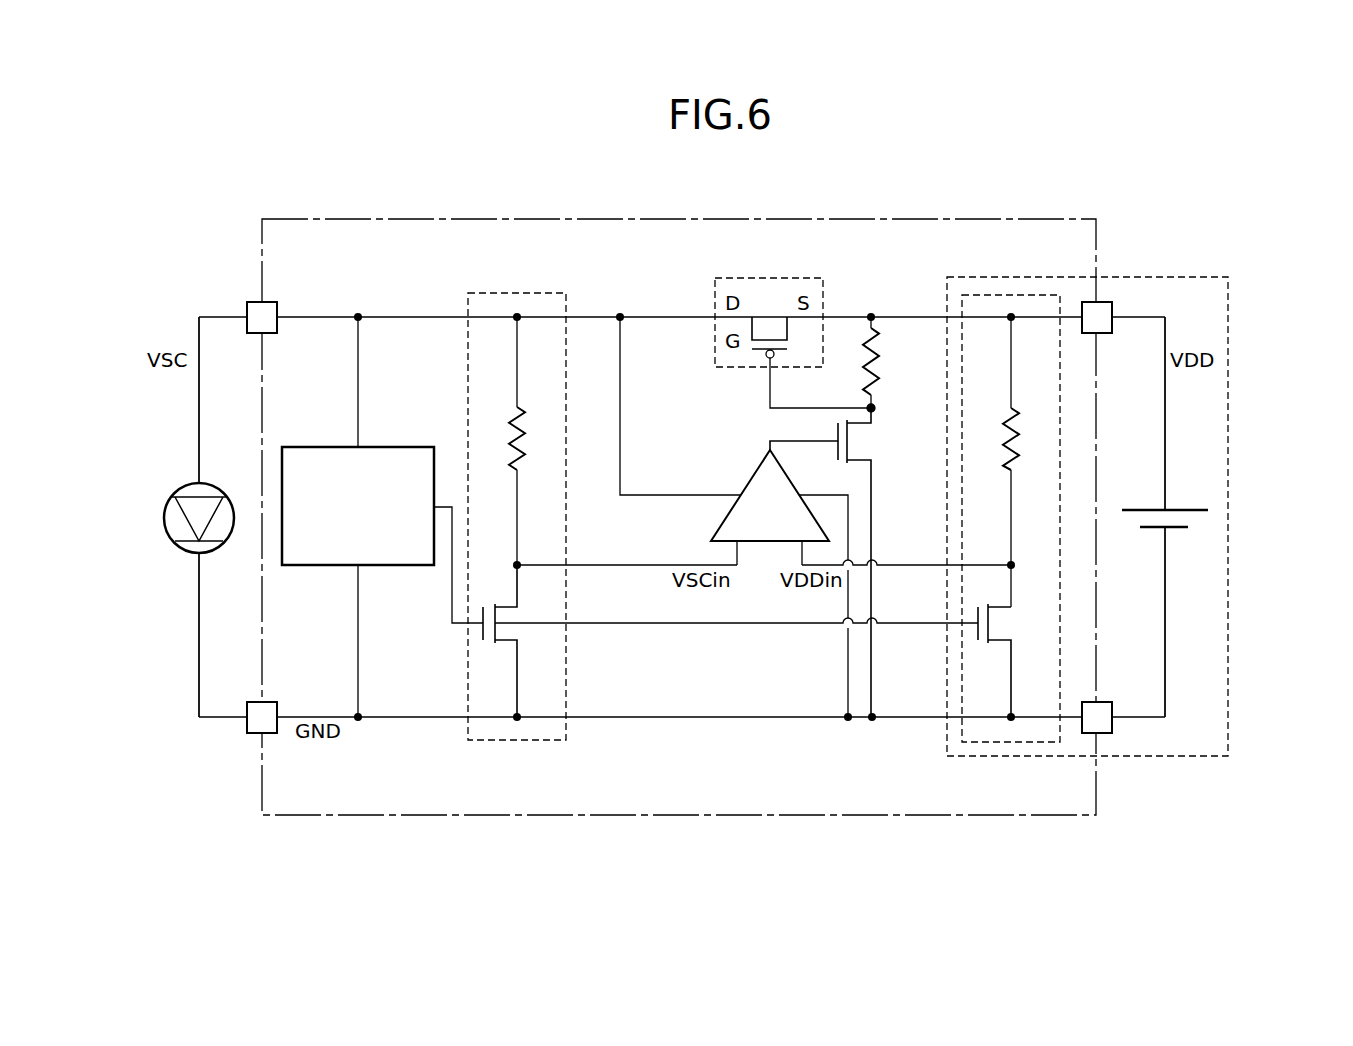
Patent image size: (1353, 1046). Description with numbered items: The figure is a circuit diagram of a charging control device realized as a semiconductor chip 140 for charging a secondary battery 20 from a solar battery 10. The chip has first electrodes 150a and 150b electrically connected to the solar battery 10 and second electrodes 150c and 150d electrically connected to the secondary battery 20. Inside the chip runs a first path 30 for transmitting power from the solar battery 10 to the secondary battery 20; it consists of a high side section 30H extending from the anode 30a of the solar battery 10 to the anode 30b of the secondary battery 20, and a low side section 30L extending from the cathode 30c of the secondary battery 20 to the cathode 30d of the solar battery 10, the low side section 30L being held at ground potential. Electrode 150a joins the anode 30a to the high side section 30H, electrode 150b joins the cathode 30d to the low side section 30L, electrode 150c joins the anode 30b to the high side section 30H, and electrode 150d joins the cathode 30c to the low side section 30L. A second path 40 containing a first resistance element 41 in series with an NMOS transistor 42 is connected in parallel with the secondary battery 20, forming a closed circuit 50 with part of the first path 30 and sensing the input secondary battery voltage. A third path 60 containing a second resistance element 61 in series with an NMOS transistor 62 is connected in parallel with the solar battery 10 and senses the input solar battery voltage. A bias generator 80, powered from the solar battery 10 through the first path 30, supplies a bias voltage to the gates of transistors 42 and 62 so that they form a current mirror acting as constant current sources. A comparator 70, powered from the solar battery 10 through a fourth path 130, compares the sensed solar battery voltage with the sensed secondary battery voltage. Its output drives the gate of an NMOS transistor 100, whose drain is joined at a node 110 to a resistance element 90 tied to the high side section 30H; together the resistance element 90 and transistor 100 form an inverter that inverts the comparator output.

The solar battery 10 is at (228, 537).
The secondary battery 20 is at (1178, 510).
The first path 30 is at (88, 470).
The high side section 30H is at (199, 418).
The low side section 30L is at (199, 600).
The anode of the solar battery 30a is at (203, 481).
The anode of the secondary battery 30b is at (1160, 506).
The cathode of the secondary battery 30c is at (1160, 531).
The cathode of the solar battery 30d is at (203, 558).
The second path 40 is at (1011, 485).
The first resistance element 41 is at (1018, 412).
The NMOS transistor 42 is at (992, 643).
The closed circuit 50 is at (1180, 277).
The third path 60 is at (517, 492).
The second resistance element 61 is at (525, 410).
The NMOS transistor 62 is at (497, 643).
The comparator 70 is at (752, 480).
The bias generator 80 is at (403, 447).
The resistance element 90 is at (880, 338).
The NMOS transistor 100 is at (853, 422).
The node 110 is at (875, 406).
The fourth path 130 is at (622, 386).
The semiconductor chip 140 is at (1003, 219).
The first electrode 150a is at (253, 302).
The first electrode 150b is at (255, 733).
The second electrode 150c is at (1105, 333).
The second electrode 150d is at (1105, 702).